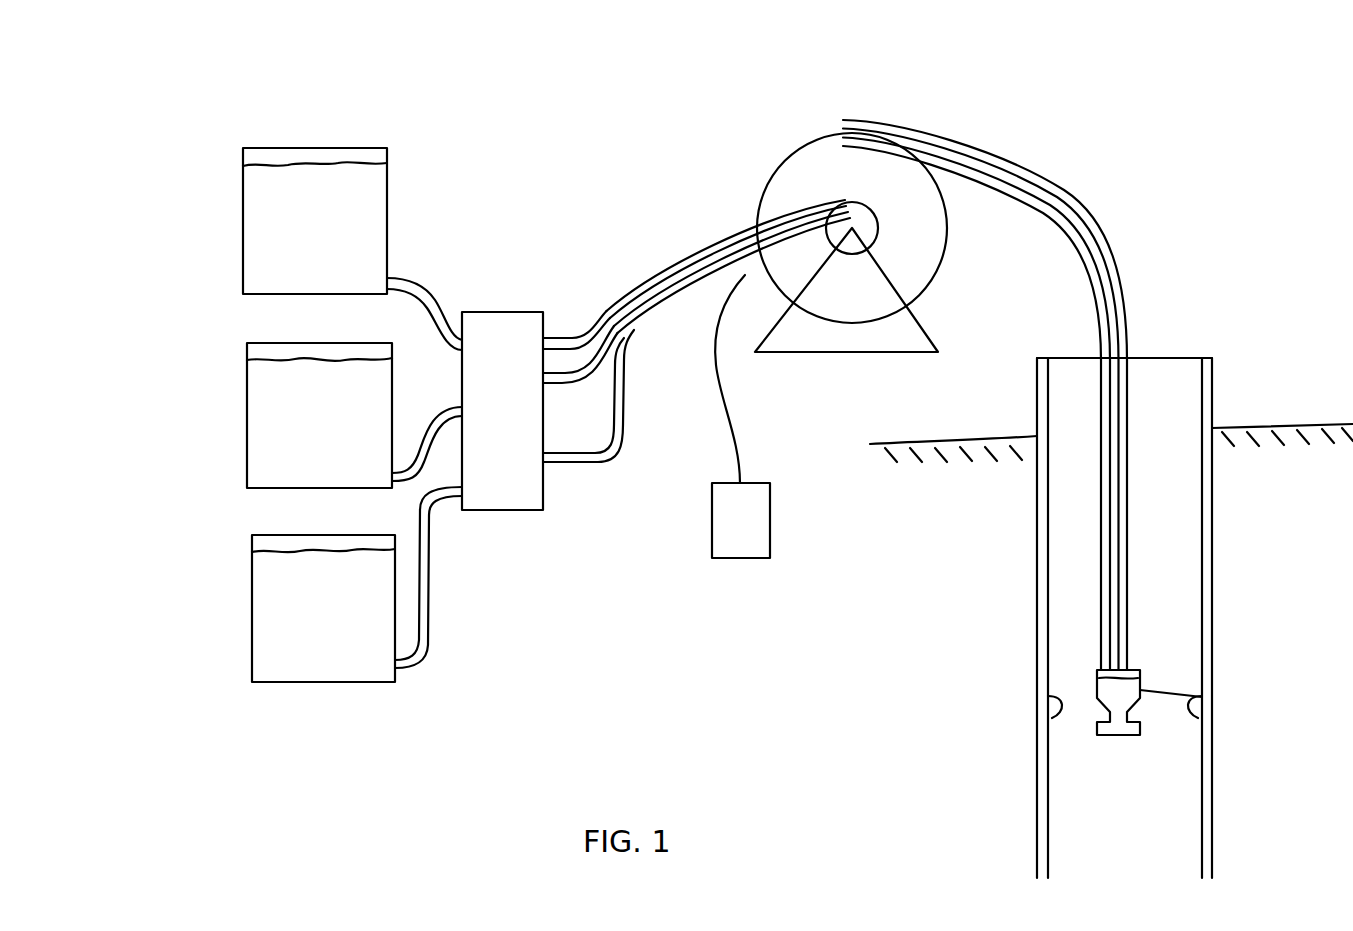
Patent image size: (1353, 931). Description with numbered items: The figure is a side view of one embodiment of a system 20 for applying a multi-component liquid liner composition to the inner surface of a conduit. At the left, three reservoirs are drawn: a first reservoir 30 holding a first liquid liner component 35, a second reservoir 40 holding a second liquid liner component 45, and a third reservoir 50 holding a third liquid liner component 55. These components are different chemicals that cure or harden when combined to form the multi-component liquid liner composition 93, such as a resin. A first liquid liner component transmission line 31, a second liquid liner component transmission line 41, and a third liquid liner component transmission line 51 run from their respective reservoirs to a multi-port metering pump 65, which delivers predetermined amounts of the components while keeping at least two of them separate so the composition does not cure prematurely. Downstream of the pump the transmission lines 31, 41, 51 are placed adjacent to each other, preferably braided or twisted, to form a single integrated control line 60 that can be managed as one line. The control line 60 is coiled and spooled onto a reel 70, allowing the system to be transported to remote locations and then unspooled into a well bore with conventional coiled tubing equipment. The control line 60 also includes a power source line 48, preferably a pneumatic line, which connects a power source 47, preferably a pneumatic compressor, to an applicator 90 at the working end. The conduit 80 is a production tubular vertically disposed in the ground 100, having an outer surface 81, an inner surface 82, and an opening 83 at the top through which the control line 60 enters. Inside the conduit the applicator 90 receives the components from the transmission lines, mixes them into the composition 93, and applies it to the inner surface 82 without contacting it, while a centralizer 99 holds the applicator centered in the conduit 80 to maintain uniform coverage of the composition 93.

The system 20 is at (1185, 158).
The first reservoir 30 is at (372, 150).
The first liquid liner component transmission line 31 is at (425, 289).
The first liquid liner component 35 is at (359, 210).
The second reservoir 40 is at (335, 345).
The second liquid liner component transmission line 41 is at (428, 412).
The second liquid liner component 45 is at (285, 403).
The power source 47 is at (735, 548).
The power source line 48 is at (733, 410).
The third reservoir 50 is at (346, 685).
The third liquid liner component transmission line 51 is at (429, 598).
The third liquid liner component 55 is at (282, 610).
The control line 60 is at (716, 252).
The multi-port metering pump 65 is at (521, 514).
The reel 70 is at (815, 137).
The conduit 80 is at (1146, 593).
The outer surface 81 is at (1212, 607).
The inner surface 82 is at (1190, 638).
The opening 83 is at (1075, 358).
The applicator 90 is at (1113, 716).
The multi-component liquid liner composition 93 is at (1125, 688).
The centralizer 99 is at (1083, 680).
The ground 100 is at (1305, 425).